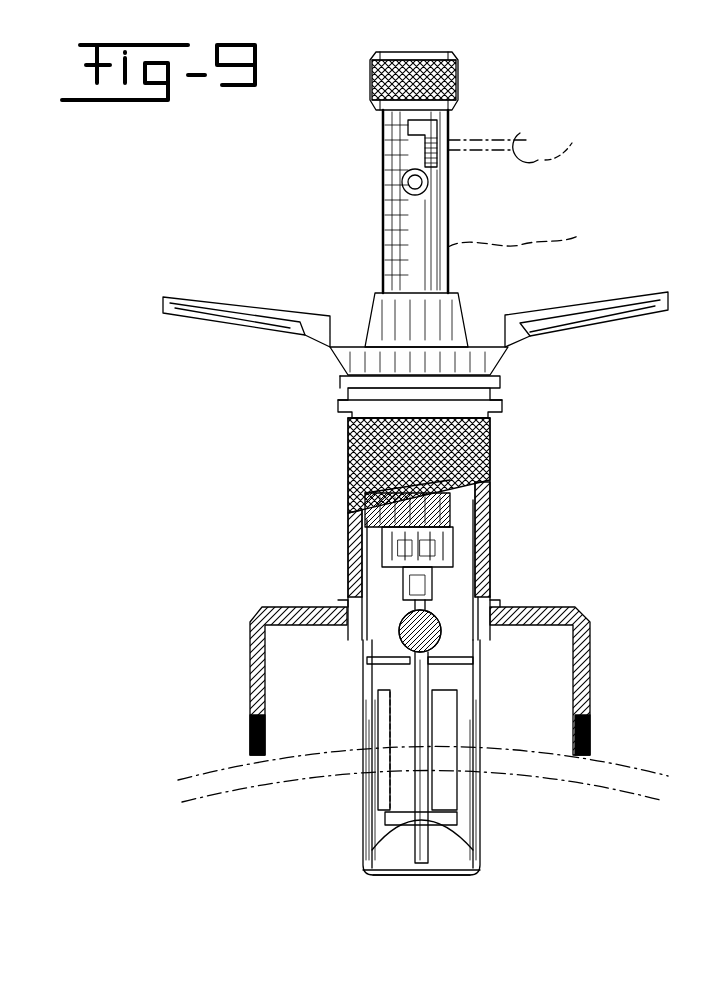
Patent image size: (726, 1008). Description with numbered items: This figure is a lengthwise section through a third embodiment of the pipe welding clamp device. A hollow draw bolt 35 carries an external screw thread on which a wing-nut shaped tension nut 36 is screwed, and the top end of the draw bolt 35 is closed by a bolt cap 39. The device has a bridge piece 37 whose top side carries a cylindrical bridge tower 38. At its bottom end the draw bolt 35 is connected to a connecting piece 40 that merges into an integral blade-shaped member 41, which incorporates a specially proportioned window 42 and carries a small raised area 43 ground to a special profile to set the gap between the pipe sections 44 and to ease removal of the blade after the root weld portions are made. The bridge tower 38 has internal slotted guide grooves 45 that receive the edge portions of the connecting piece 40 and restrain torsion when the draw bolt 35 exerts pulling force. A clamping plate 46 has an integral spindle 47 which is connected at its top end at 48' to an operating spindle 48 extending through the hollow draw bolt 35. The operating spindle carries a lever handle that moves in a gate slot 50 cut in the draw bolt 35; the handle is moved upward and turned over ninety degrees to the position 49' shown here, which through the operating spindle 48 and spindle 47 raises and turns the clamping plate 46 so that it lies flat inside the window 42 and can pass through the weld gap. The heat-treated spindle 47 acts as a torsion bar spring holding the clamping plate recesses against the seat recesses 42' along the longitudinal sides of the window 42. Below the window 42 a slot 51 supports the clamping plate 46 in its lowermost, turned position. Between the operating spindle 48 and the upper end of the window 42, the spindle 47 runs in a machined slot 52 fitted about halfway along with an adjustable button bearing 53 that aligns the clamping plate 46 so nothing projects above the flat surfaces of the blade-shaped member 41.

The draw bolt 35 is at (385, 222).
The tension nut 36 is at (540, 330).
The bridge piece 37 is at (590, 625).
The bridge tower 38 is at (490, 500).
The bolt cap 39 is at (455, 90).
The connecting piece 40 is at (492, 575).
The blade-shaped member 41 is at (480, 825).
The window 42 is at (482, 757).
The seat recesses 42' is at (431, 748).
The raised area 43 is at (375, 790).
The pipe section 44 is at (640, 782).
The guide grooves 45 is at (348, 497).
The clamping plate 46 is at (482, 878).
The spindle 47 is at (475, 762).
The operating spindle 48 is at (529, 230).
The connection point 48' is at (503, 587).
The turned handle position 49' is at (526, 146).
The gate slot 50 is at (448, 127).
The slot 51 is at (385, 855).
The machined slot 52 is at (385, 668).
The button bearing 53 is at (445, 655).